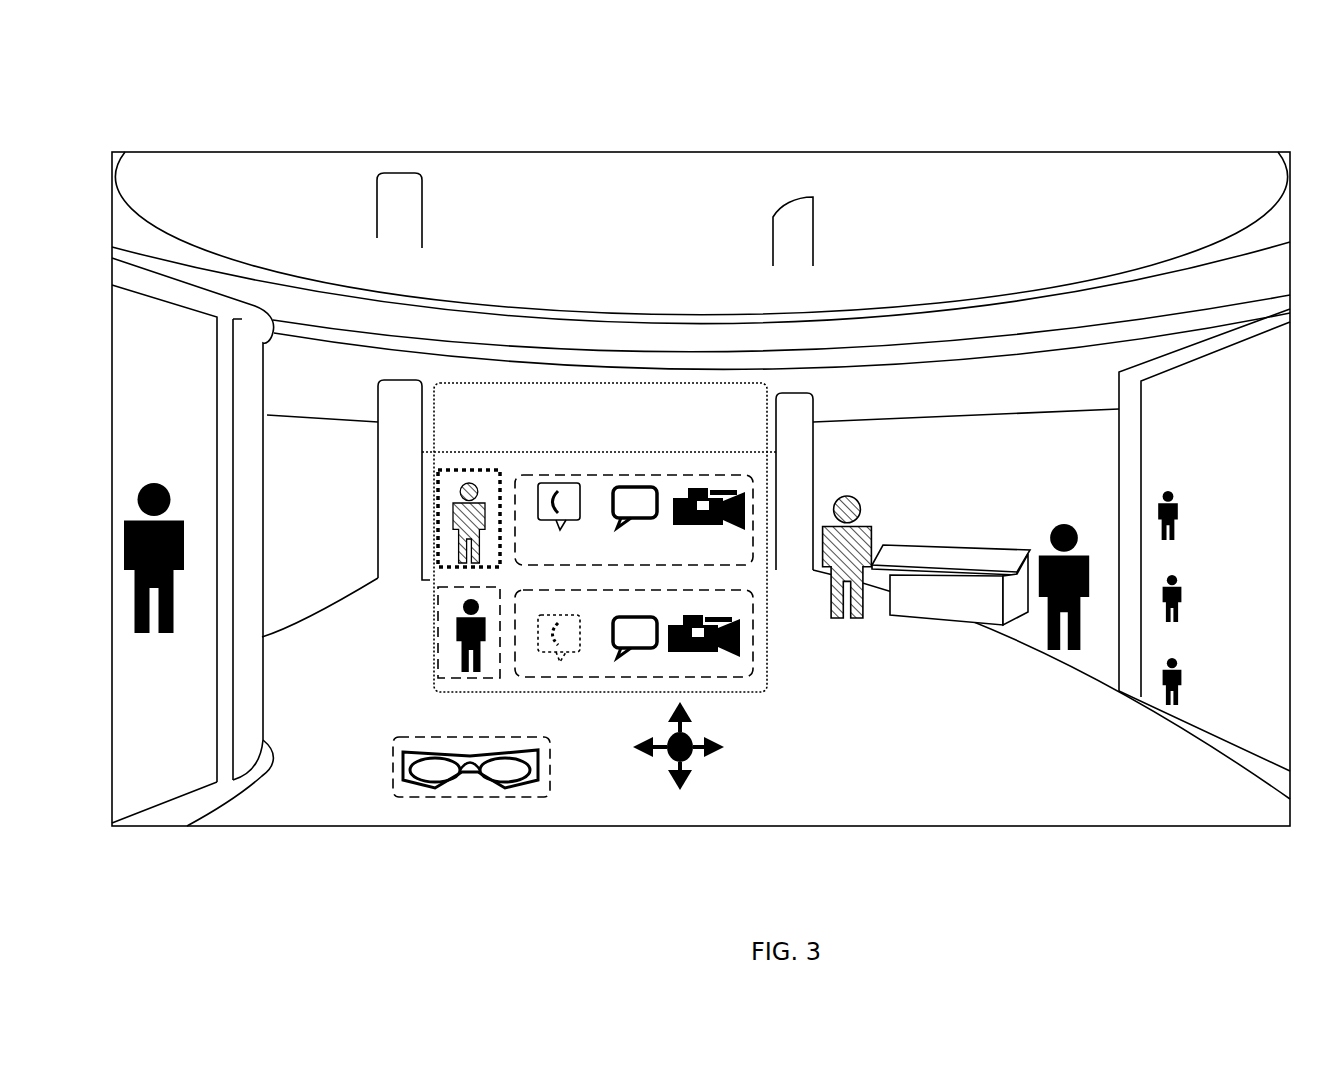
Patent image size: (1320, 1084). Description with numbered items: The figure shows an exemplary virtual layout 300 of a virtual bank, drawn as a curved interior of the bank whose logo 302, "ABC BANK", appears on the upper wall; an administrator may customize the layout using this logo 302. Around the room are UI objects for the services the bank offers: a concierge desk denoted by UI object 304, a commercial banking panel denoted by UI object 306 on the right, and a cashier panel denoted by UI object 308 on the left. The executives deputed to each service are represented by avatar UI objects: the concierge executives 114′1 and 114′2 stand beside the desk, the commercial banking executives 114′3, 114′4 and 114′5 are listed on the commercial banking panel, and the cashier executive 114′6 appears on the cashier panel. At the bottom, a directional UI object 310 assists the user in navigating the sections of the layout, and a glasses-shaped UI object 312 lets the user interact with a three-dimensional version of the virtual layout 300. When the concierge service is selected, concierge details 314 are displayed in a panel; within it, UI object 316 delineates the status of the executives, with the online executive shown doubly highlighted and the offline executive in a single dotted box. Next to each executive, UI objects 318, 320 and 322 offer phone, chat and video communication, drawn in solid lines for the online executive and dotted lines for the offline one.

The virtual layout 300 is at (768, 94).
The logo 302 is at (690, 221).
The UI object for concierge services 304 is at (1012, 494).
The UI object for commercial banking services 306 is at (1190, 461).
The UI object for cashier services 308 is at (136, 431).
The navigation UI object 310 is at (660, 824).
The 3-D interaction UI object 312 is at (461, 727).
The concierge details 314 is at (576, 441).
The executive status UI object 316 is at (437, 538).
The phone communication UI object 318 is at (538, 561).
The chat communication UI object 320 is at (613, 561).
The video communication UI object 322 is at (684, 561).
The UI object for concierge executive 114′1 is at (850, 618).
The UI object for concierge executive 114′2 is at (1058, 650).
The UI object for commercial banking executive 114′3 is at (1282, 526).
The UI object for commercial banking executive 114′4 is at (1282, 619).
The UI object for commercial banking executive 114′5 is at (1282, 704).
The UI object for cashier executive 114′6 is at (190, 703).